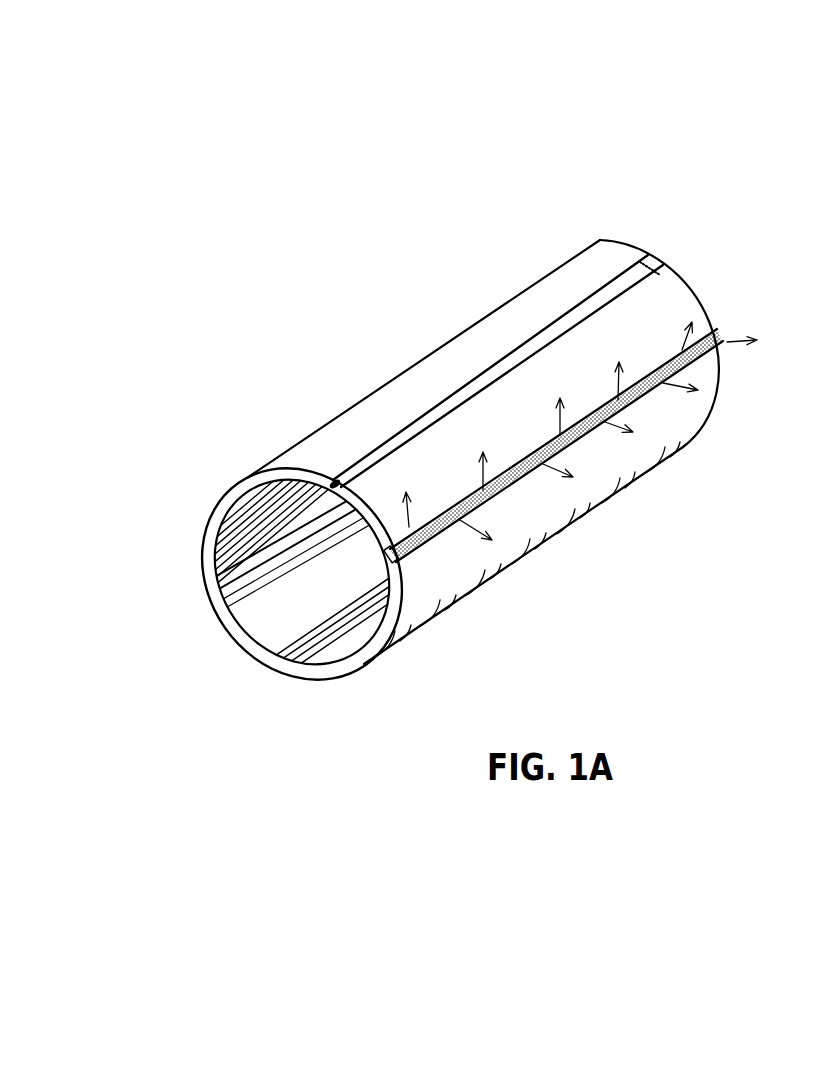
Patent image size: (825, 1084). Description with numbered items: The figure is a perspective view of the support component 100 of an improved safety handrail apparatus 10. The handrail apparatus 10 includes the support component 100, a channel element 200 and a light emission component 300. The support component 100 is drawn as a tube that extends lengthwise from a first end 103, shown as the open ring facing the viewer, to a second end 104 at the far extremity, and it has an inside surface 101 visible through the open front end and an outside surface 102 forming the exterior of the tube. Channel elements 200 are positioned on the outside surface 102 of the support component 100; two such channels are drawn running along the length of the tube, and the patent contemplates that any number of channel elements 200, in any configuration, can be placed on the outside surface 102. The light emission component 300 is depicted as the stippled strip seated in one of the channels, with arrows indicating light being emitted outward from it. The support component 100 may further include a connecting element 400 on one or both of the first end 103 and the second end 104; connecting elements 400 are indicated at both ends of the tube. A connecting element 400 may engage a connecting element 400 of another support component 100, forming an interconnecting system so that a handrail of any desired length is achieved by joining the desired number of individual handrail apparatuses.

The safety handrail apparatus 10 is at (247, 340).
The support component 100 is at (538, 513).
The inside surface 101 is at (263, 590).
The outside surface 102 is at (420, 597).
The first end 103 is at (280, 660).
The second end 104 is at (707, 303).
The channel element 200 is at (648, 268).
The light emission component 300 is at (703, 348).
The connecting element 400 is at (621, 246).